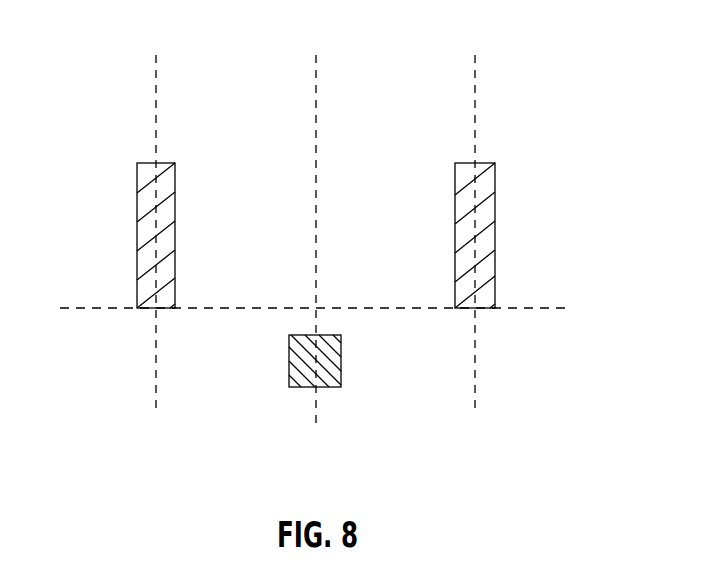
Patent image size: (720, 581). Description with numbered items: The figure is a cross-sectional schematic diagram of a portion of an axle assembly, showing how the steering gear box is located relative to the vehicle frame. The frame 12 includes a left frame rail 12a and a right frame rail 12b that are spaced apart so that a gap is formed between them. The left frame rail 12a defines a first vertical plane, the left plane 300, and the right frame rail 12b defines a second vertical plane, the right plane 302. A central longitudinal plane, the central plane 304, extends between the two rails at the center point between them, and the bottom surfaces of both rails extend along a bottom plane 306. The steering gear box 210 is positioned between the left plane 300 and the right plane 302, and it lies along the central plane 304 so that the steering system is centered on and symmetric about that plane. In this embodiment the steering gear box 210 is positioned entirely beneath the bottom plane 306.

The frame 12 is at (283, 204).
The left frame rail 12a is at (147, 170).
The right frame rail 12b is at (490, 168).
The steering gear box 210 is at (342, 372).
The left plane 300 is at (157, 78).
The right plane 302 is at (476, 78).
The central plane 304 is at (317, 109).
The bottom plane 306 is at (542, 308).